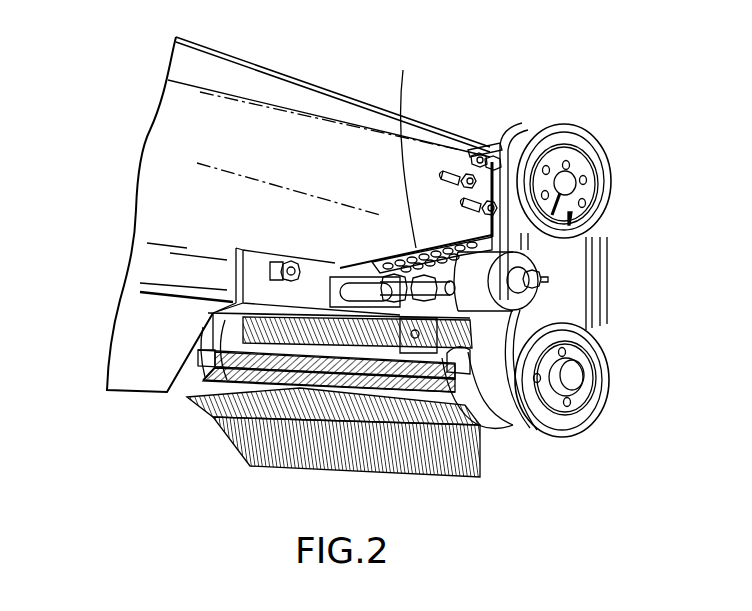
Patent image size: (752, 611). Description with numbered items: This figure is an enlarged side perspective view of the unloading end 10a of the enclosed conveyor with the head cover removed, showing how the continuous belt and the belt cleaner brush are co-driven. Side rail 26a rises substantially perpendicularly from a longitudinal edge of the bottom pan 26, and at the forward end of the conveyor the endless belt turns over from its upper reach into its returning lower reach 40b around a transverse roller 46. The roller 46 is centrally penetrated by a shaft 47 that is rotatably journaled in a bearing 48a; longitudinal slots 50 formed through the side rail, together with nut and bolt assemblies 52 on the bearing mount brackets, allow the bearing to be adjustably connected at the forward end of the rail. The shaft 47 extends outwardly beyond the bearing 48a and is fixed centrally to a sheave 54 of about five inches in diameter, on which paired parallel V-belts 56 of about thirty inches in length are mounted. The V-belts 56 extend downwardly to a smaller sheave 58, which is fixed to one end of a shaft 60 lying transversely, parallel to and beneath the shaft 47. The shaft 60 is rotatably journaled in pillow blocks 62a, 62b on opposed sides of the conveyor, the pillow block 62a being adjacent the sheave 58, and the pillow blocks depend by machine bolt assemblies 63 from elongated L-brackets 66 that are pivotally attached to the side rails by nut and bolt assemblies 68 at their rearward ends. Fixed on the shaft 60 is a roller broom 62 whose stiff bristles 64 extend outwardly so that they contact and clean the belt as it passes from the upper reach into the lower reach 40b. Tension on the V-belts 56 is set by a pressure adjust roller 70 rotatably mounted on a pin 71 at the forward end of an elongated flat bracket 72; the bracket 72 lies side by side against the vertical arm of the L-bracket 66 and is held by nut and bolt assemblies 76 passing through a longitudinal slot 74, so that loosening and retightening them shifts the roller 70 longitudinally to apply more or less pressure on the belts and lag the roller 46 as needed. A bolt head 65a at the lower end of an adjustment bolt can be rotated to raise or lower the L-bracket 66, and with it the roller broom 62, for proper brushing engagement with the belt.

The unloading end 10a is at (530, 48).
The bottom pan 26 is at (132, 367).
The side rail 26a is at (282, 147).
The lower reach 40b is at (400, 149).
The roller 46 is at (497, 200).
The shaft 47 is at (565, 187).
The bearing 48a is at (500, 192).
The longitudinal slots 50 is at (466, 166).
The nut and bolt assemblies 52 is at (491, 158).
The sheave 54 is at (577, 160).
The V-belts 56 is at (613, 327).
The sheave 58 is at (555, 398).
The shaft 60 is at (579, 373).
The roller broom 62 is at (477, 427).
The pillow block 62a is at (482, 428).
The pillow block 62b is at (212, 377).
The machine bolt assemblies 63 is at (437, 466).
The bristles 64 is at (462, 456).
The bolt head 65a is at (252, 450).
The L-bracket 66 is at (252, 267).
The nut and bolt assemblies 68 is at (286, 264).
The pressure adjust roller 70 is at (536, 266).
The pin or shaft 71 is at (542, 283).
The flat bracket 72 is at (360, 277).
The longitudinal slot 74 is at (352, 290).
The nut and bolt assemblies 76 is at (433, 266).